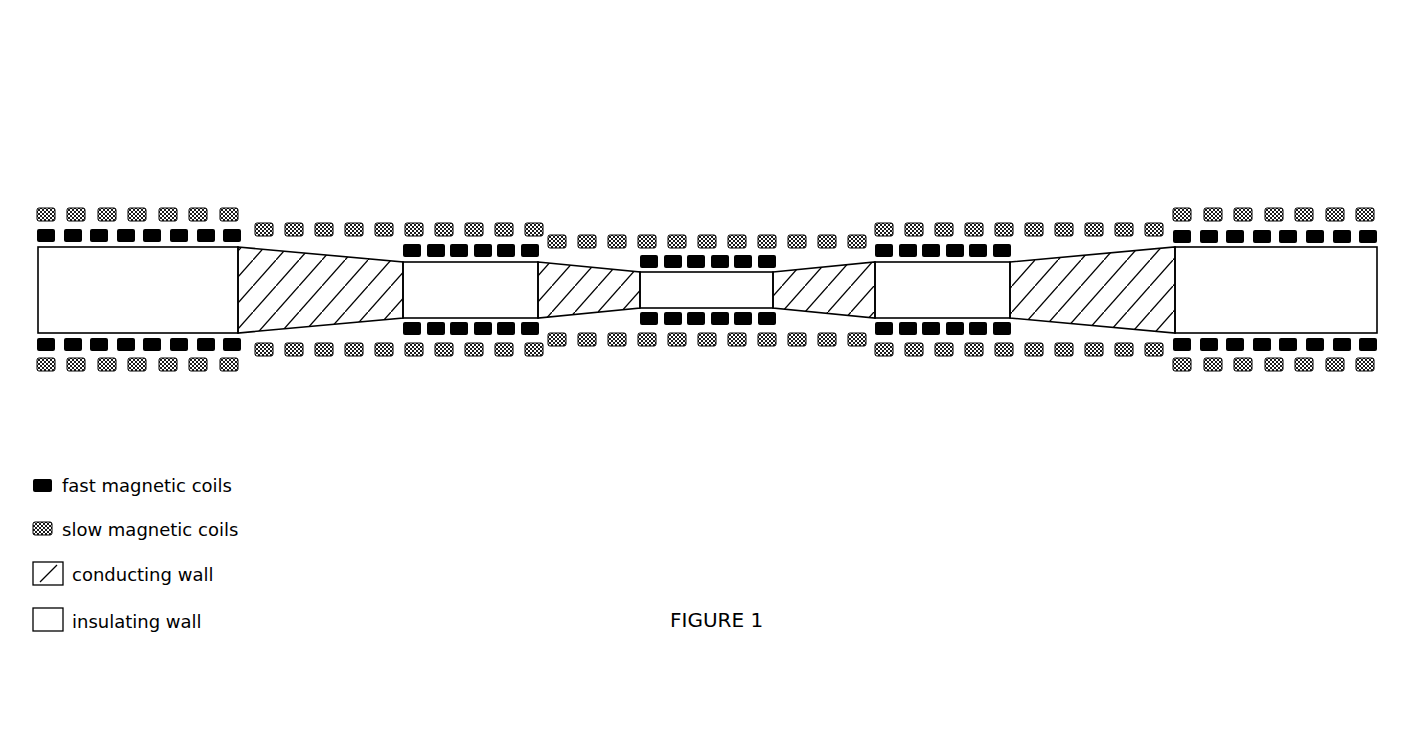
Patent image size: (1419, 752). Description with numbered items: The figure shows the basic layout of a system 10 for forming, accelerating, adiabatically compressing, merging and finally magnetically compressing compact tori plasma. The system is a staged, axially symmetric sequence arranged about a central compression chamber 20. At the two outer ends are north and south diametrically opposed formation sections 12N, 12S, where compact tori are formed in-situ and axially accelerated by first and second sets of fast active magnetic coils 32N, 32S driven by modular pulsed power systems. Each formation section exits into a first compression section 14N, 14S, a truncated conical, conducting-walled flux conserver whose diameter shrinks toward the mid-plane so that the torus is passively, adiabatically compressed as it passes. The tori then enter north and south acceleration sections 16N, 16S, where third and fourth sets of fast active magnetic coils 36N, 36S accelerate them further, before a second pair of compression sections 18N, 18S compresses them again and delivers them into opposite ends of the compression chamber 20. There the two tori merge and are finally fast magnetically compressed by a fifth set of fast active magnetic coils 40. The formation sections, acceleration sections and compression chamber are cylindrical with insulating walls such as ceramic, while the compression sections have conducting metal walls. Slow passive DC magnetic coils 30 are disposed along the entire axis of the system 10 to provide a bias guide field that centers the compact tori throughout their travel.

The system 10 is at (698, 31).
The north formation section 12N is at (222, 247).
The south formation section 12S is at (1197, 247).
The north first compression section 14N is at (343, 248).
The south first compression section 14S is at (1075, 260).
The north acceleration section 16N is at (520, 262).
The south acceleration section 16S is at (895, 262).
The north second compression section 18N is at (628, 268).
The south second compression section 18S is at (805, 268).
The central compression chamber 20 is at (757, 270).
The slow passive magnetic coils 30 is at (137, 210).
The first set of fast active magnetic coils 32N is at (127, 351).
The second set of fast active magnetic coils 32S is at (1265, 351).
The third set of fast active magnetic coils 36N is at (460, 335).
The fourth set of fast active magnetic coils 36S is at (933, 335).
The fifth set of fast active magnetic coils 40 is at (697, 326).